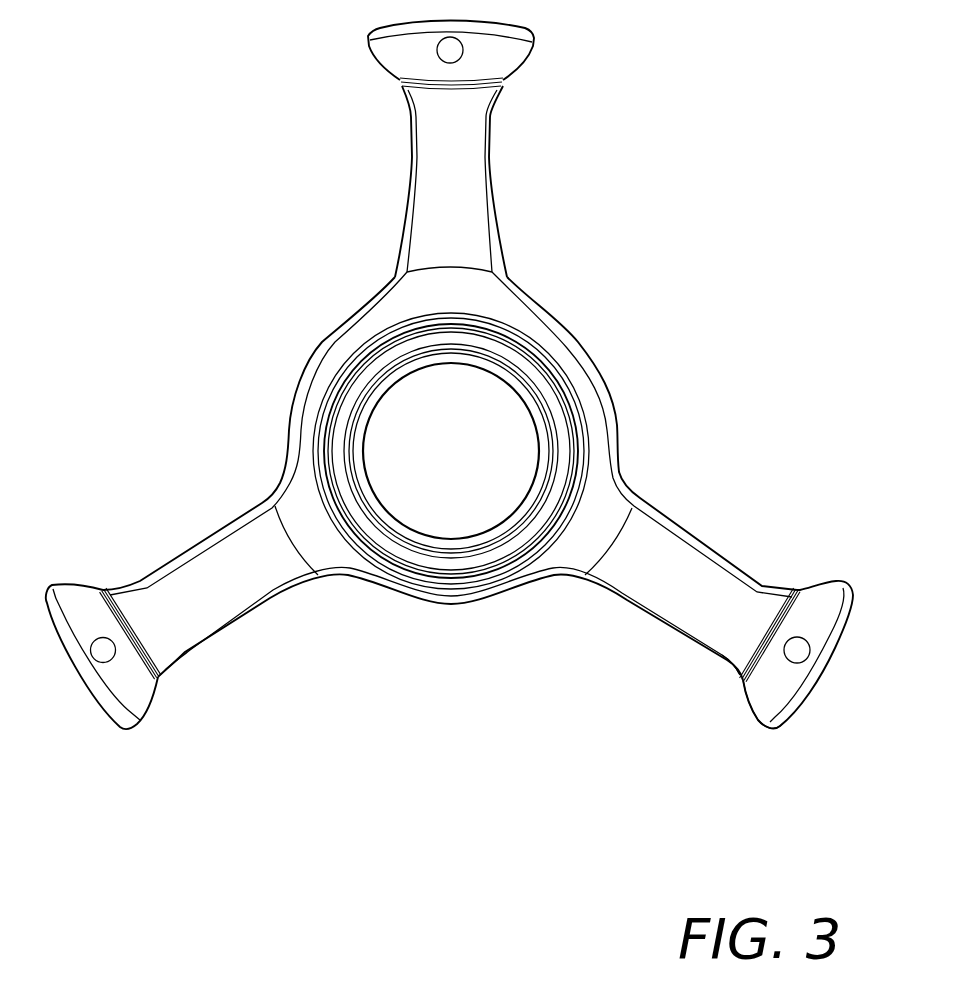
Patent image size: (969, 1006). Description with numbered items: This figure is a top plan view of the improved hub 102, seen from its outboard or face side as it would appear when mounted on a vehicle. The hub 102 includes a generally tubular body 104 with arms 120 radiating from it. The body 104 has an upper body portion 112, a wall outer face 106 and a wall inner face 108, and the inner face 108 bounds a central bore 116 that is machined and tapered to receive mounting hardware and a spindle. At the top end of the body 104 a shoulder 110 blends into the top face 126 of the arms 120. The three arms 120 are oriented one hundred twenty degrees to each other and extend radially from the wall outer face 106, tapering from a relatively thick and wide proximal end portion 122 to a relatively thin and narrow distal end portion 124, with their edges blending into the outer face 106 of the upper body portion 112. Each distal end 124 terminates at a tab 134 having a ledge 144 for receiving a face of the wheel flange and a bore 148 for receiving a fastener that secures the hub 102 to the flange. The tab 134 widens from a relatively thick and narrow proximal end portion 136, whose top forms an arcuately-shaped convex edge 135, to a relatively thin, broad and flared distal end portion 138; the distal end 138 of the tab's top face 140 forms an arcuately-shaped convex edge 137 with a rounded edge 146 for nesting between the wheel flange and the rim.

The hub 102 is at (660, 226).
The body 104 is at (604, 408).
The wall outer face 106 is at (332, 340).
The wall inner face 108 is at (363, 457).
The shoulder 110 is at (567, 359).
The upper body portion 112 is at (295, 416).
The central bore 116 is at (530, 416).
The arm 120 is at (481, 190).
The proximal end portion 122 is at (273, 513).
The distal end portion 124 is at (160, 671).
The top face 126 is at (246, 600).
The tab 134 is at (368, 32).
The convex edge 135 is at (797, 588).
The proximal end portion 136 is at (743, 681).
The convex edge 137 is at (810, 673).
The distal end portion 138 is at (770, 725).
The top face 140 is at (842, 620).
The ledge 144 is at (753, 700).
The rounded edge 146 is at (785, 717).
The bore 148 is at (787, 658).